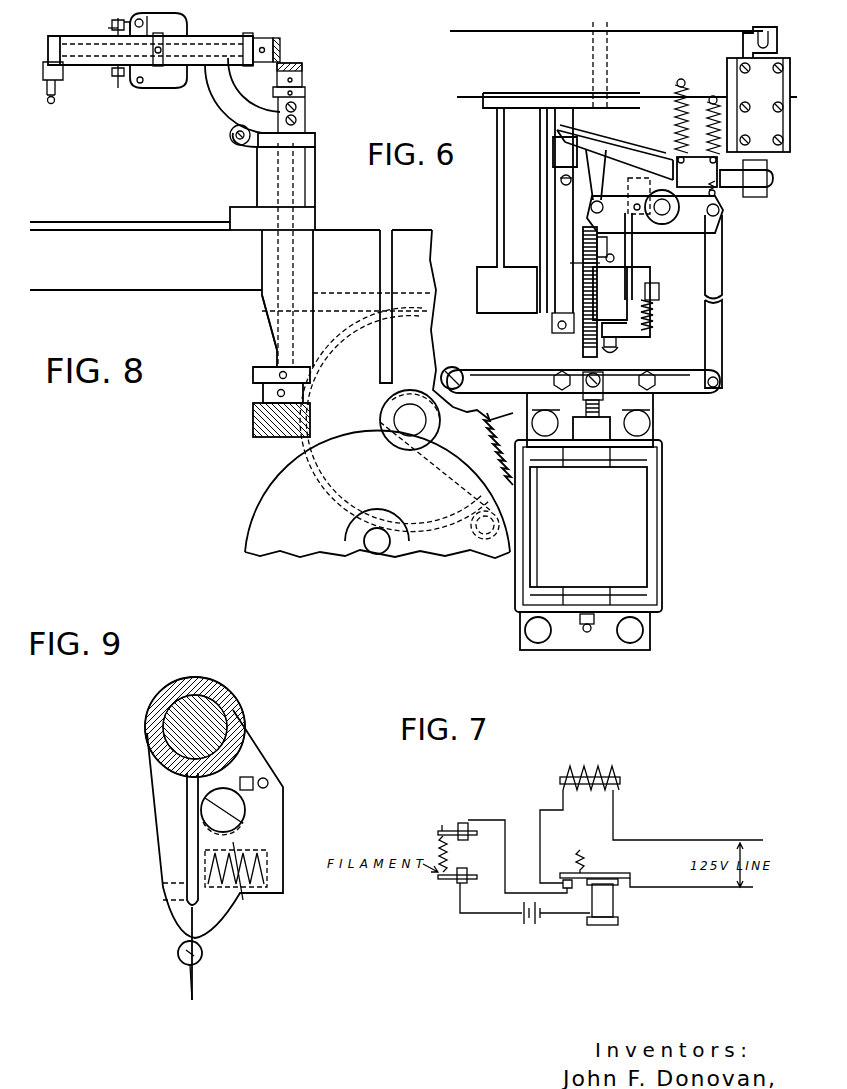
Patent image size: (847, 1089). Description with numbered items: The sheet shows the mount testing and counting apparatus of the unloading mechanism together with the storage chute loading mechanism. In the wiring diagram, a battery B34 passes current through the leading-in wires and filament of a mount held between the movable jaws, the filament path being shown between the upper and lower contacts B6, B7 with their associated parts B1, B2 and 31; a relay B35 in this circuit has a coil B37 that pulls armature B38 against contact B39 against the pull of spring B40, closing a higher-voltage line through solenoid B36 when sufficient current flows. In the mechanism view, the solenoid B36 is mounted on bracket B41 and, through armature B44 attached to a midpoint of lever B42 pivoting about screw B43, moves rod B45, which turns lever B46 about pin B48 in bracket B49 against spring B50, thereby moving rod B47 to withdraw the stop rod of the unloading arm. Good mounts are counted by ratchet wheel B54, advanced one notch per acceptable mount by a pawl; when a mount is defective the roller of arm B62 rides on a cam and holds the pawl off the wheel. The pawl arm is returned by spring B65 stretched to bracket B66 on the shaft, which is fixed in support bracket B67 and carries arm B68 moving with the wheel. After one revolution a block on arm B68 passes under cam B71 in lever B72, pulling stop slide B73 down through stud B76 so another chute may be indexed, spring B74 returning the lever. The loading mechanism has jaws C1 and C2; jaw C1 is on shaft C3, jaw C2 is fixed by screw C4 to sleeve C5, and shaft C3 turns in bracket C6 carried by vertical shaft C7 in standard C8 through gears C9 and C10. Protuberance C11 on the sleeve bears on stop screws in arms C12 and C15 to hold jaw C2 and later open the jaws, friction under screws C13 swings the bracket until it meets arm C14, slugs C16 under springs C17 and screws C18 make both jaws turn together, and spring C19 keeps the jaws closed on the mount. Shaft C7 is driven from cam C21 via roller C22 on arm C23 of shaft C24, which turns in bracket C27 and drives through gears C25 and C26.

In FIG. 8, the jaw C1 is at (43, 82).
In FIG. 9, the jaw C1 is at (160, 860).
In FIG. 9, the jaw C2 is at (215, 925).
In FIG. 8, the shaft C3 is at (230, 43).
In FIG. 9, the shaft C3 is at (225, 712).
In FIG. 9, the screw C4 is at (247, 810).
In FIG. 8, the sleeve C5 is at (95, 63).
In FIG. 9, the sleeve C5 is at (243, 745).
In FIG. 8, the bracket C6 is at (218, 115).
In FIG. 8, the shaft C7 is at (294, 198).
In FIG. 8, the standard C8 is at (238, 204).
In FIG. 8, the gear C9 is at (303, 78).
In FIG. 8, the gear C10 is at (283, 44).
In FIG. 8, the protuberance C11 is at (110, 25).
In FIG. 8, the arm C12 is at (167, 89).
In FIG. 8, the screws C13 is at (300, 118).
In FIG. 8, the arm C14 is at (236, 150).
In FIG. 8, the arm C15 is at (185, 26).
In FIG. 8, the slugs C16 is at (118, 68).
In FIG. 8, the springs C17 is at (110, 31).
In FIG. 8, the screws C18 is at (128, 27).
In FIG. 9, the spring C19 is at (236, 880).
In FIG. 8, the cam C21 is at (247, 523).
In FIG. 8, the roller C22 is at (485, 540).
In FIG. 8, the arm C23 is at (448, 510).
In FIG. 8, the shaft C24 is at (410, 405).
In FIG. 8, the gear C25 is at (278, 468).
In FIG. 8, the gear C26 is at (253, 436).
In FIG. 8, the bracket C27 is at (268, 327).
In FIG. 7, the spring B1 is at (468, 838).
In FIG. 7, the contact B2 is at (467, 870).
In FIG. 7, the upper contact B6 is at (458, 824).
In FIG. 7, the lower contact B7 is at (453, 885).
In FIG. 7, the terminal 31 is at (468, 880).
In FIG. 7, the battery B34 is at (522, 921).
In FIG. 7, the relay B35 is at (656, 909).
In FIG. 6, the solenoid B36 is at (640, 523).
In FIG. 7, the solenoid B36 is at (610, 770).
In FIG. 7, the coil B37 is at (617, 920).
In FIG. 7, the armature B38 is at (607, 873).
In FIG. 7, the contact B39 is at (567, 888).
In FIG. 7, the spring B40 is at (577, 858).
In FIG. 6, the bracket B41 is at (655, 409).
In FIG. 6, the lever B42 is at (537, 371).
In FIG. 6, the screw B43 is at (471, 361).
In FIG. 6, the armature B44 is at (600, 407).
In FIG. 7, the armature B44 is at (618, 786).
In FIG. 6, the rod B45 is at (722, 322).
In FIG. 6, the lever B46 is at (705, 238).
In FIG. 6, the rod B47 is at (590, 29).
In FIG. 6, the pin B48 is at (662, 216).
In FIG. 6, the bracket B49 is at (637, 190).
In FIG. 6, the spring B50 is at (716, 196).
In FIG. 6, the ratchet wheel B54 is at (583, 344).
In FIG. 6, the arm B62 is at (632, 268).
In FIG. 6, the spring B65 is at (656, 316).
In FIG. 6, the bracket B66 is at (618, 340).
In FIG. 6, the support bracket B67 is at (496, 207).
In FIG. 6, the arm B68 is at (553, 235).
In FIG. 6, the cam B71 is at (552, 157).
In FIG. 6, the lever B72 is at (644, 110).
In FIG. 6, the stop slide B73 is at (750, 33).
In FIG. 6, the spring B74 is at (685, 108).
In FIG. 6, the stud B76 is at (758, 197).